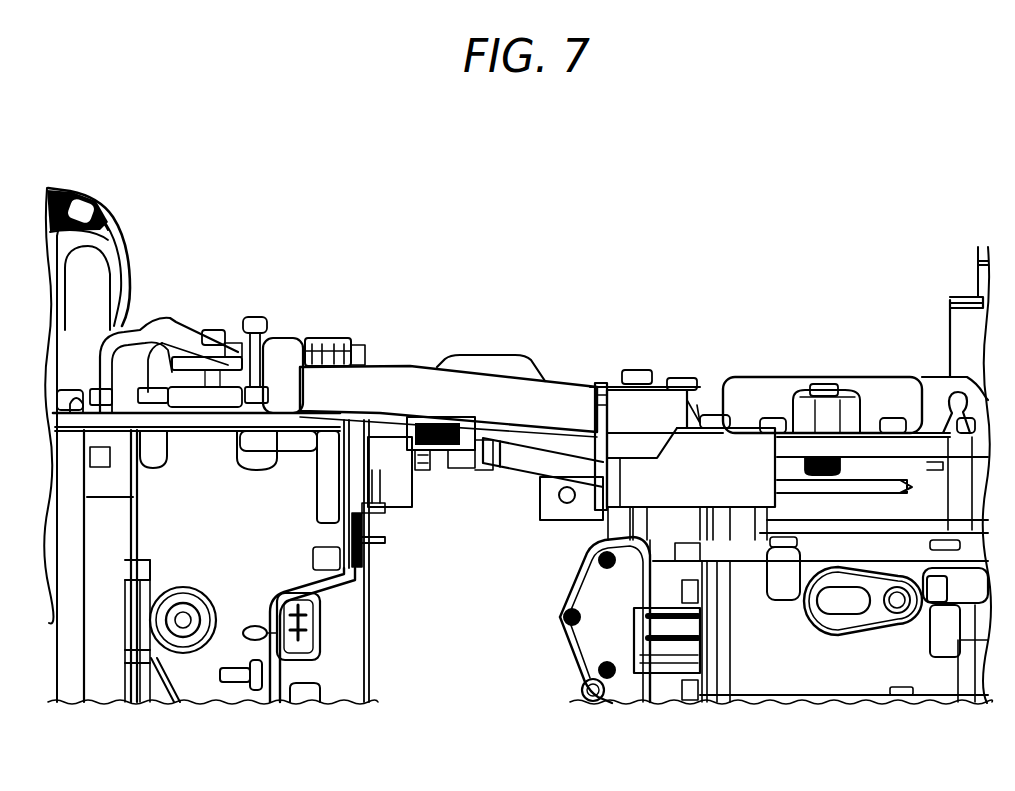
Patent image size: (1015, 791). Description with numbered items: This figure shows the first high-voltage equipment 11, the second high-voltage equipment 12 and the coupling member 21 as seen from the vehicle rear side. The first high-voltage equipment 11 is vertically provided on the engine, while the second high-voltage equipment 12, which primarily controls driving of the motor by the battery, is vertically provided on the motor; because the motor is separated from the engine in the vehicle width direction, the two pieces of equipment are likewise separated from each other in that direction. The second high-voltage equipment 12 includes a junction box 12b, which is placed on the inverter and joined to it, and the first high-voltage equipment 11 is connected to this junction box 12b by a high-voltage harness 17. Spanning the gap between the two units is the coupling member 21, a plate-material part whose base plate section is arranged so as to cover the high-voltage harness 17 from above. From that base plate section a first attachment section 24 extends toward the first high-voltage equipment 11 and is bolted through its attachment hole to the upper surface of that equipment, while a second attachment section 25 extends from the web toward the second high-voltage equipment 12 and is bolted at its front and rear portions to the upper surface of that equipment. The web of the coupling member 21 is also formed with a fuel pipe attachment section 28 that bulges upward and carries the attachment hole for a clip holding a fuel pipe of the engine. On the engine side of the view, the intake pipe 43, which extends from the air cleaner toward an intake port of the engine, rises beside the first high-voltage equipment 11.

The first high-voltage equipment 11 is at (207, 676).
The second high-voltage equipment 12 is at (874, 373).
The junction box 12b is at (835, 672).
The high-voltage harness 17 is at (523, 460).
The coupling member 21 is at (407, 366).
The first attachment section 24 is at (330, 377).
The second attachment section 25 is at (608, 381).
The fuel pipe attachment section 28 is at (490, 357).
The intake pipe 43 is at (115, 266).